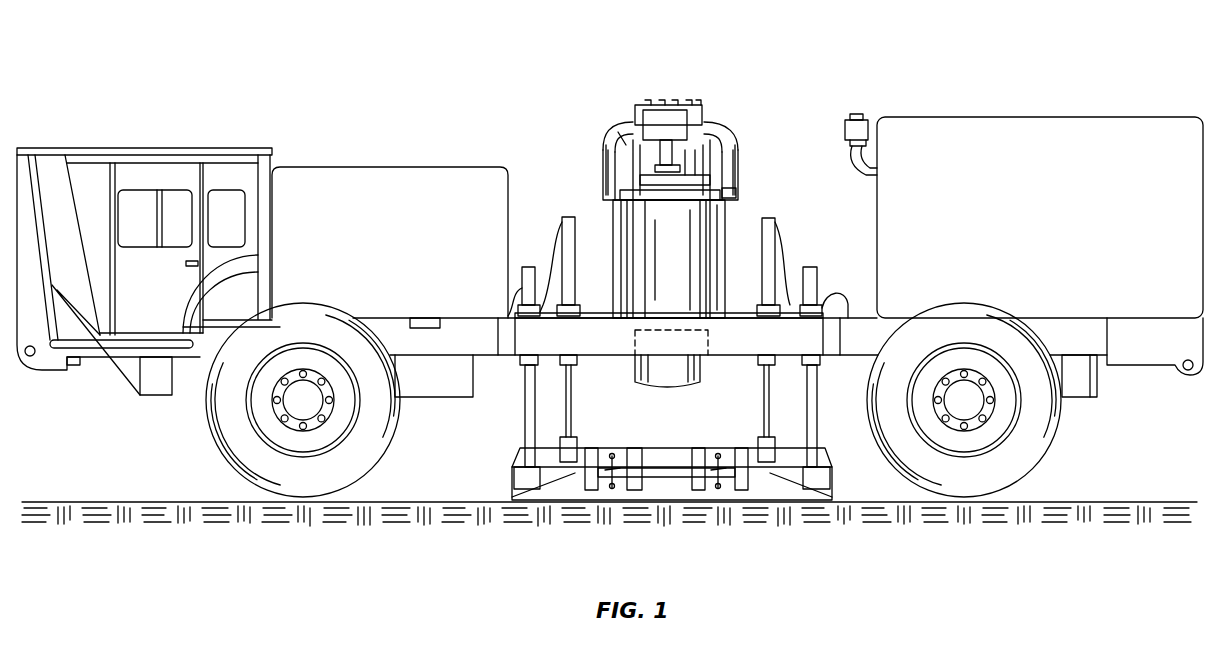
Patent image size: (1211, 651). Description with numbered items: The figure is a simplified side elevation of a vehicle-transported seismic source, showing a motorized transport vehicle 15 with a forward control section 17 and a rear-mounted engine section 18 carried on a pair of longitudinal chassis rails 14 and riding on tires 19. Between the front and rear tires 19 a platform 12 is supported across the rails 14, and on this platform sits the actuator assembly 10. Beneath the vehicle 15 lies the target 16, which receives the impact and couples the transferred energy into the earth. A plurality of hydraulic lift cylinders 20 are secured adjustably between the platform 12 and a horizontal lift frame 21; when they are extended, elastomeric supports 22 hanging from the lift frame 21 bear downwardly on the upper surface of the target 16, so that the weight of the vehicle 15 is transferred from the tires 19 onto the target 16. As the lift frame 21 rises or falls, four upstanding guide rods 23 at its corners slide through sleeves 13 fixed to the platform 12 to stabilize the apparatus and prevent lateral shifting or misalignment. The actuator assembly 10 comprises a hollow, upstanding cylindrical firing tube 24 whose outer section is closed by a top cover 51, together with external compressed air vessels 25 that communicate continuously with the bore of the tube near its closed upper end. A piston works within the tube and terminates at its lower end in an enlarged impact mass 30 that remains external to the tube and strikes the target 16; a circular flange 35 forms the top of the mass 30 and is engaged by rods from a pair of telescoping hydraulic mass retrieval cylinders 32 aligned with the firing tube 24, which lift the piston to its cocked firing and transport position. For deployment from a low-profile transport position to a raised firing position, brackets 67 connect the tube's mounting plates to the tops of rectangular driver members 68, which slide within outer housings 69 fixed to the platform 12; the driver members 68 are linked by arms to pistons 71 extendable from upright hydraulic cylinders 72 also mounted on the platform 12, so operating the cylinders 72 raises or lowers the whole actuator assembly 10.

The actuator assembly 10 is at (658, 74).
The platform 12 is at (745, 320).
The sleeves 13 is at (518, 306).
The longitudinal chassis rails 14 is at (1075, 342).
The motorized transport vehicle 15 is at (196, 66).
The target 16 is at (832, 479).
The forward control section 17 is at (374, 167).
The rear-mounted engine section 18 is at (1081, 117).
The tires 19 is at (230, 444).
The hydraulic lift cylinders 20 is at (568, 286).
The horizontal lift frame 21 is at (612, 455).
The elastomeric supports 22 is at (514, 478).
The guide rods 23 is at (522, 414).
The firing tube 24 is at (712, 120).
The external compressed air vessels 25 is at (608, 165).
The impact mass 30 is at (702, 370).
The telescoping hydraulic mass retrieval cylinders 32 is at (618, 138).
The circular flange 35 is at (635, 330).
The closed top cover 51 is at (683, 140).
The brackets 67 is at (700, 167).
The driver members 68 is at (655, 172).
The outer housings 69 is at (645, 218).
The pistons 71 is at (746, 190).
The upright hydraulic cylinders 72 is at (718, 242).